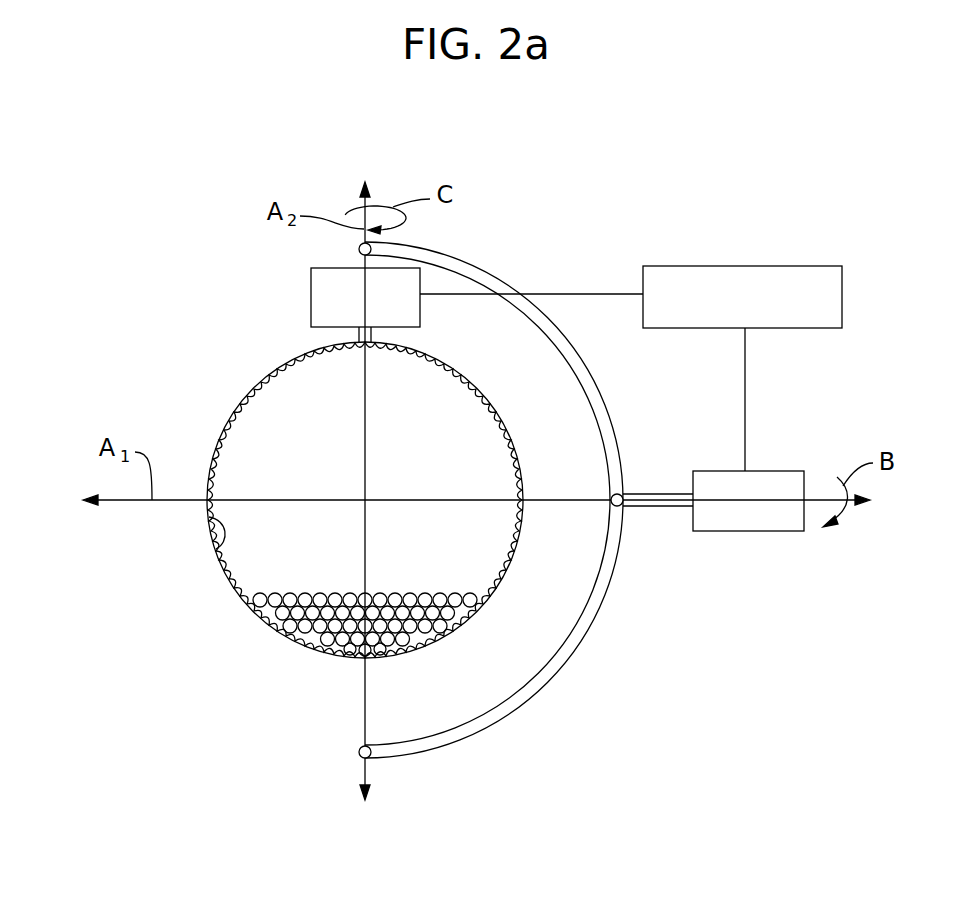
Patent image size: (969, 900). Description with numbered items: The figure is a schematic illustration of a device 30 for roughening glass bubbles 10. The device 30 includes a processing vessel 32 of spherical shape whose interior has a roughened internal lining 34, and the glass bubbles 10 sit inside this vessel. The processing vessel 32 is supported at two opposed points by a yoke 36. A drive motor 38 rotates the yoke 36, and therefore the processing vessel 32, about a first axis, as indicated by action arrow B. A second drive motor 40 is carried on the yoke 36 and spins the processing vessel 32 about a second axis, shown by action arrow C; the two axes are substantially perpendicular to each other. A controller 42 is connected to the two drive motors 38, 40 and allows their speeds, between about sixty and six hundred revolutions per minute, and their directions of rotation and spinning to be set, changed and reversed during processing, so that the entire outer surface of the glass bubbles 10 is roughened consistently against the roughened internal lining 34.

The glass bubbles 10 is at (411, 583).
The device 30 is at (626, 202).
The processing vessel 32 is at (240, 402).
The roughened internal lining 34 is at (215, 546).
The yoke 36 is at (605, 397).
The drive motor 38 is at (765, 531).
The second drive motor 40 is at (311, 293).
The controller 42 is at (757, 266).